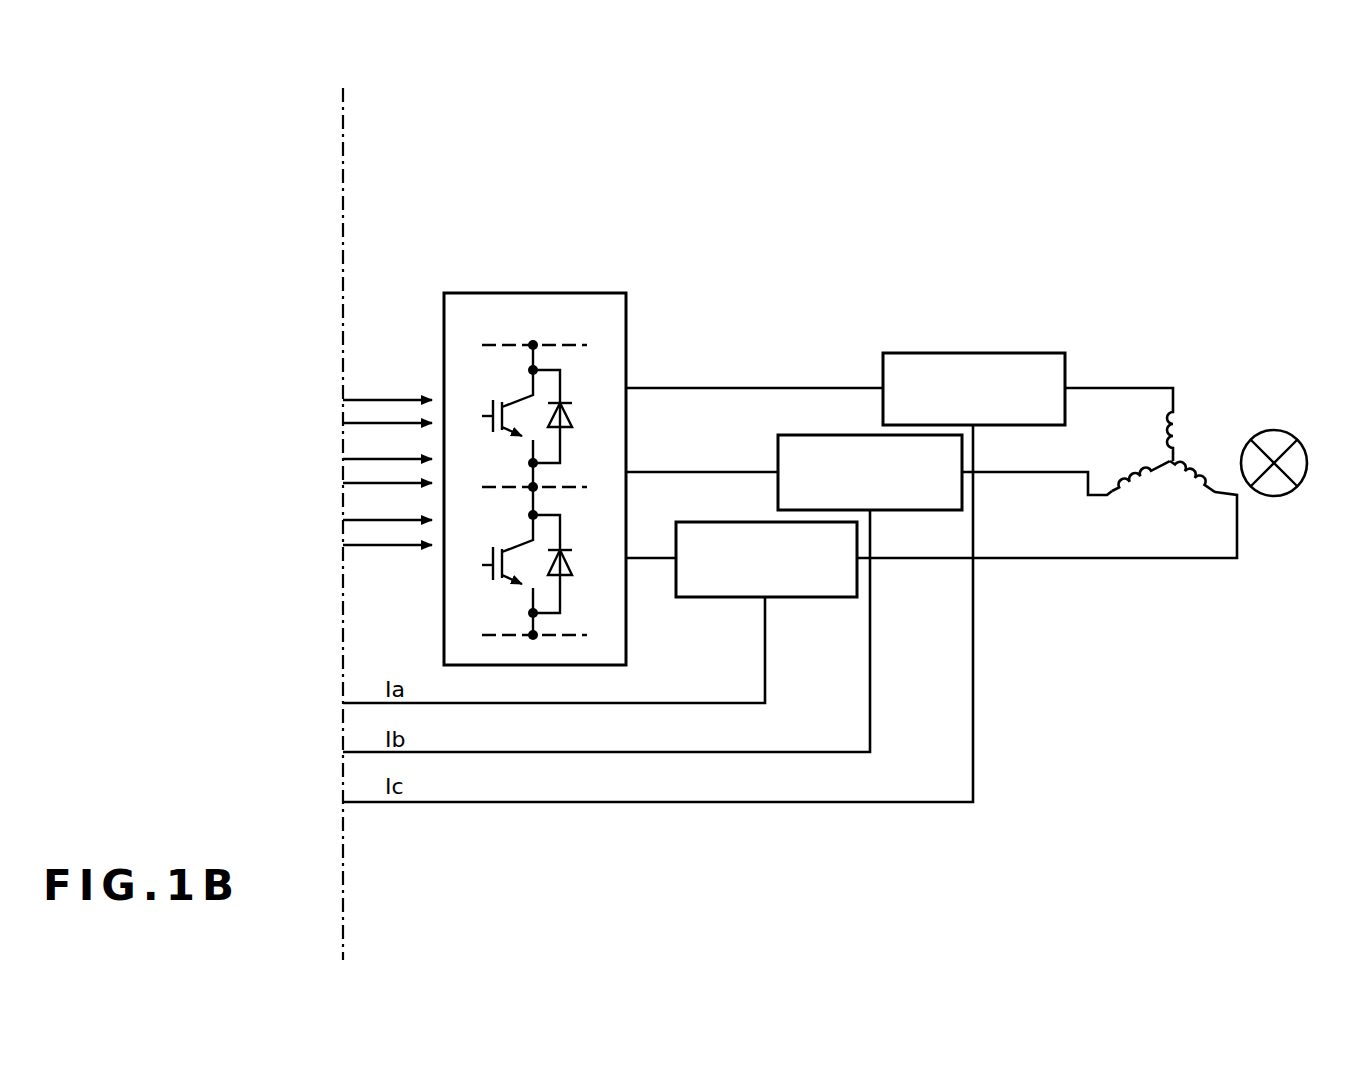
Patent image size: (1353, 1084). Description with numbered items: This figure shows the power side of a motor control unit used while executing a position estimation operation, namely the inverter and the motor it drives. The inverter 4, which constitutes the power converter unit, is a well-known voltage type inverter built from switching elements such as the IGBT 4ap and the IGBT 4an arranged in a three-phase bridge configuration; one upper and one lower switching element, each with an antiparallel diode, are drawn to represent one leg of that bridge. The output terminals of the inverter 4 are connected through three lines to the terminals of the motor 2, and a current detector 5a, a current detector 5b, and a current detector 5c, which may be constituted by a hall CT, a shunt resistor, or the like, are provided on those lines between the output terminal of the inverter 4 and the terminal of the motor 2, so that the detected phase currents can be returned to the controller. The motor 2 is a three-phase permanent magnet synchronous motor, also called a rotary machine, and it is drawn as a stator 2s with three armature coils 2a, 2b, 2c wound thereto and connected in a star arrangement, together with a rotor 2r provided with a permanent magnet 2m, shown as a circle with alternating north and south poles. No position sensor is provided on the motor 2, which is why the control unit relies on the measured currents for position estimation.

The inverter 4 is at (534, 293).
The IGBT 4ap is at (498, 394).
The IGBT 4an is at (500, 537).
The current detector 5a is at (988, 353).
The current detector 5b is at (778, 452).
The current detector 5c is at (812, 598).
The motor 2 is at (1203, 310).
The stator 2s is at (1168, 378).
The armature coil 2a is at (1181, 420).
The armature coil 2b is at (1140, 473).
The armature coil 2c is at (1192, 488).
The rotor 2r is at (1274, 378).
The permanent magnet 2m is at (1275, 497).